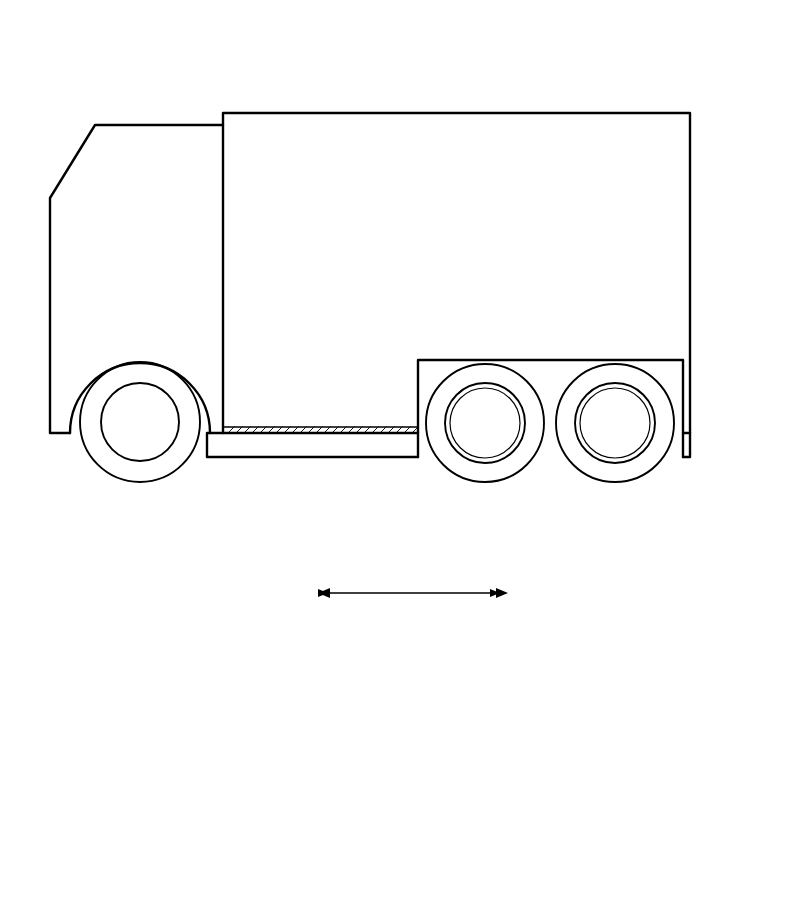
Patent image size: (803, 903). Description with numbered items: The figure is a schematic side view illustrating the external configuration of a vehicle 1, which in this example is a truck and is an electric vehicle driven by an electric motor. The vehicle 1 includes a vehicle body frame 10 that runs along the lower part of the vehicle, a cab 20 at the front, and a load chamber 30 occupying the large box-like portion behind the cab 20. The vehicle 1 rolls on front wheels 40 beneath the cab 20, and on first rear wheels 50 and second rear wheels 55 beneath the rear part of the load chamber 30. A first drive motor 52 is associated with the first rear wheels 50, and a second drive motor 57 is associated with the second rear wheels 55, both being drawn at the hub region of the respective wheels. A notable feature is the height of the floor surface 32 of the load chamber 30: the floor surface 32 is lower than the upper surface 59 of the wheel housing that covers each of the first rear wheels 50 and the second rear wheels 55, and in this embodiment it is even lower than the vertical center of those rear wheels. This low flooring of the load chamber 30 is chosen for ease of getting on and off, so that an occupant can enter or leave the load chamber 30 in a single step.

The vehicle 1 is at (335, 70).
The vehicle body frame 10 is at (325, 445).
The cab 20 is at (152, 125).
The load chamber 30 is at (480, 115).
The floor surface 32 is at (382, 425).
The front wheels 40 is at (132, 478).
The first rear wheels 50 is at (615, 430).
The first drive motor 52 is at (606, 385).
The second rear wheels 55 is at (485, 430).
The second drive motor 57 is at (480, 383).
The upper surface 59 is at (570, 358).